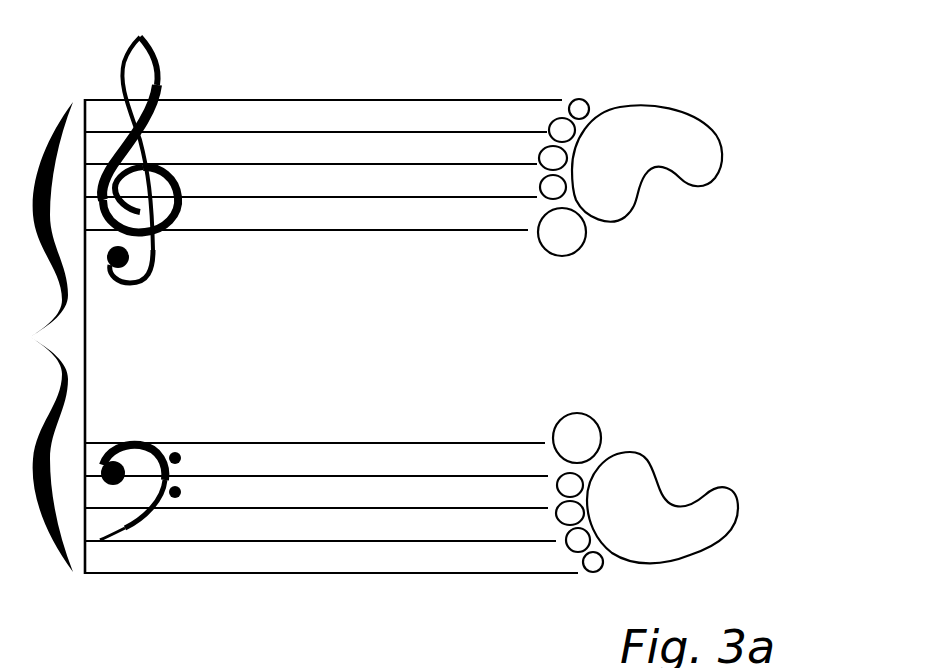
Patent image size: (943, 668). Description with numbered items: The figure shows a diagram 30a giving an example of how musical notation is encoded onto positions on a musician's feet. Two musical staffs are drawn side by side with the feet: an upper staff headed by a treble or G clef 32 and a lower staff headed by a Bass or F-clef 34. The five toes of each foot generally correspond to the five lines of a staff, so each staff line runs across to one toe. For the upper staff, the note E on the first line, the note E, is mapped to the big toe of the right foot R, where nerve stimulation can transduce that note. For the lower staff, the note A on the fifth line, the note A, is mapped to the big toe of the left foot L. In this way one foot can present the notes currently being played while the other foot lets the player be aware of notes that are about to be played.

The diagram 30a is at (447, 298).
The treble or G clef 32 is at (155, 62).
The Bass or F-clef 34 is at (152, 447).
The note E is at (390, 232).
The note A is at (363, 442).
The right foot R is at (630, 177).
The left foot L is at (645, 492).